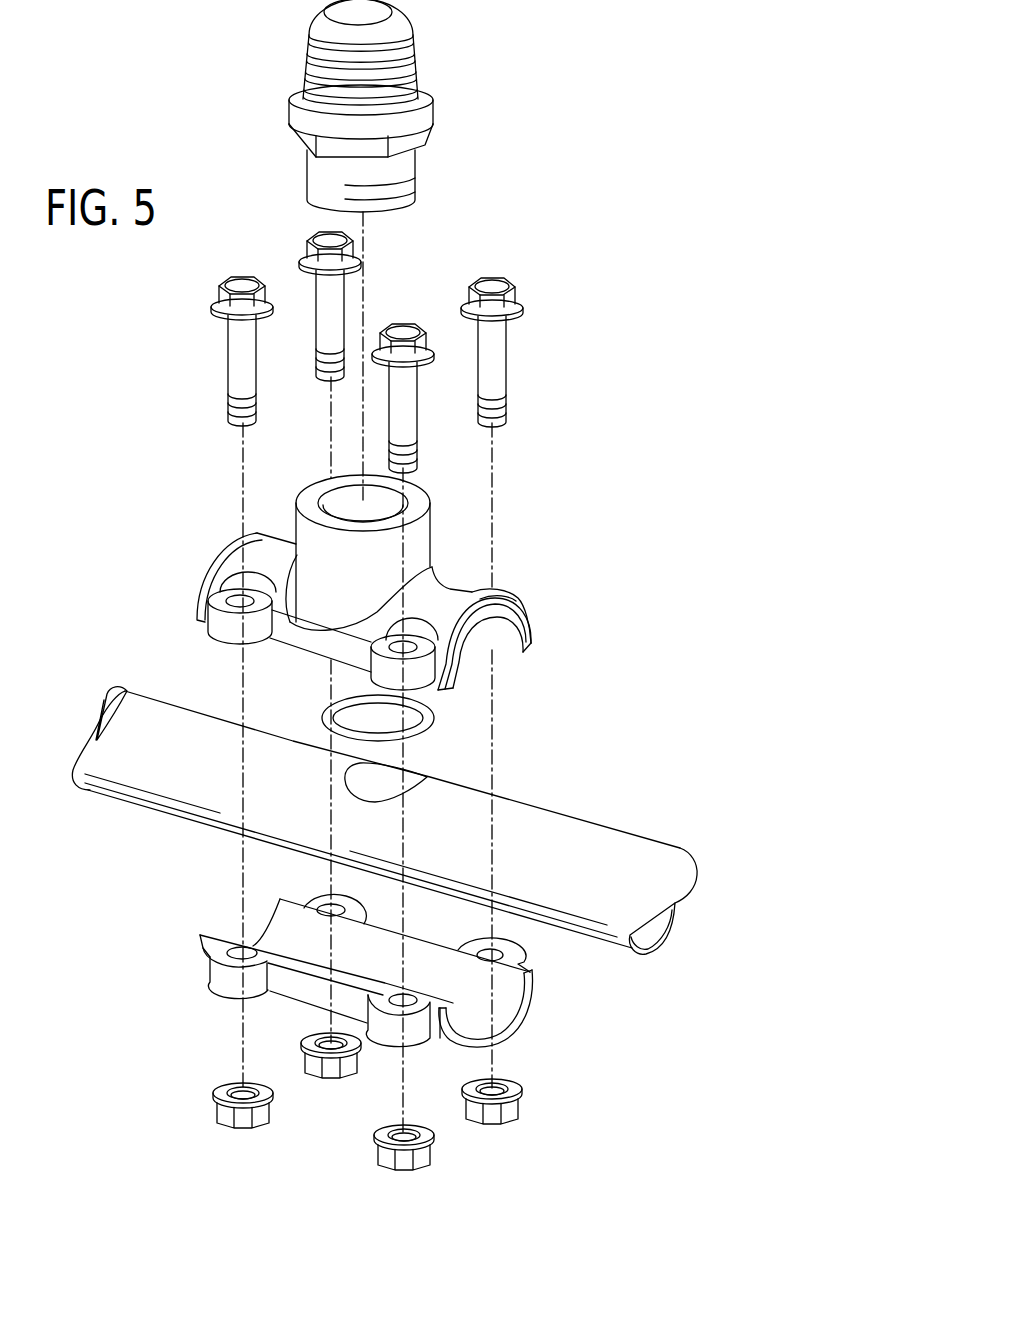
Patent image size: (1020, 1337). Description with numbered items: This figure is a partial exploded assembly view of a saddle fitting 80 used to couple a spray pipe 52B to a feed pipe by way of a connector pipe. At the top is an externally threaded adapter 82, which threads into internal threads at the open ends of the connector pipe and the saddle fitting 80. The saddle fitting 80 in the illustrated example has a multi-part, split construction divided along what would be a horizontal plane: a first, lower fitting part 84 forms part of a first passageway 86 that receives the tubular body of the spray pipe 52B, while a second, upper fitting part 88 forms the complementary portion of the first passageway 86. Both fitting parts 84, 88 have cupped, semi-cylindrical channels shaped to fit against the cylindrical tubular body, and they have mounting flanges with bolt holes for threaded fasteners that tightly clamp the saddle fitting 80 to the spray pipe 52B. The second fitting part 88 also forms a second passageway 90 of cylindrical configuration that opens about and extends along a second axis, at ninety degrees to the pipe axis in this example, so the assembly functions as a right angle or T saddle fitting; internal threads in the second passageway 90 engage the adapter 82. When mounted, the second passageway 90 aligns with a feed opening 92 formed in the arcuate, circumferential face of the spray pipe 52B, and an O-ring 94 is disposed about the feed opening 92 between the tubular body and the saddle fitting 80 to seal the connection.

The externally threaded adapter 82 is at (427, 61).
The saddle fitting 80 is at (515, 557).
The second passageway 90 is at (337, 495).
The second fitting part 88 is at (527, 625).
The first passageway 86 is at (505, 668).
The O-ring 94 is at (413, 733).
The feed opening 92 is at (348, 768).
The spray pipe 52B is at (618, 828).
The first fitting part 84 is at (198, 962).